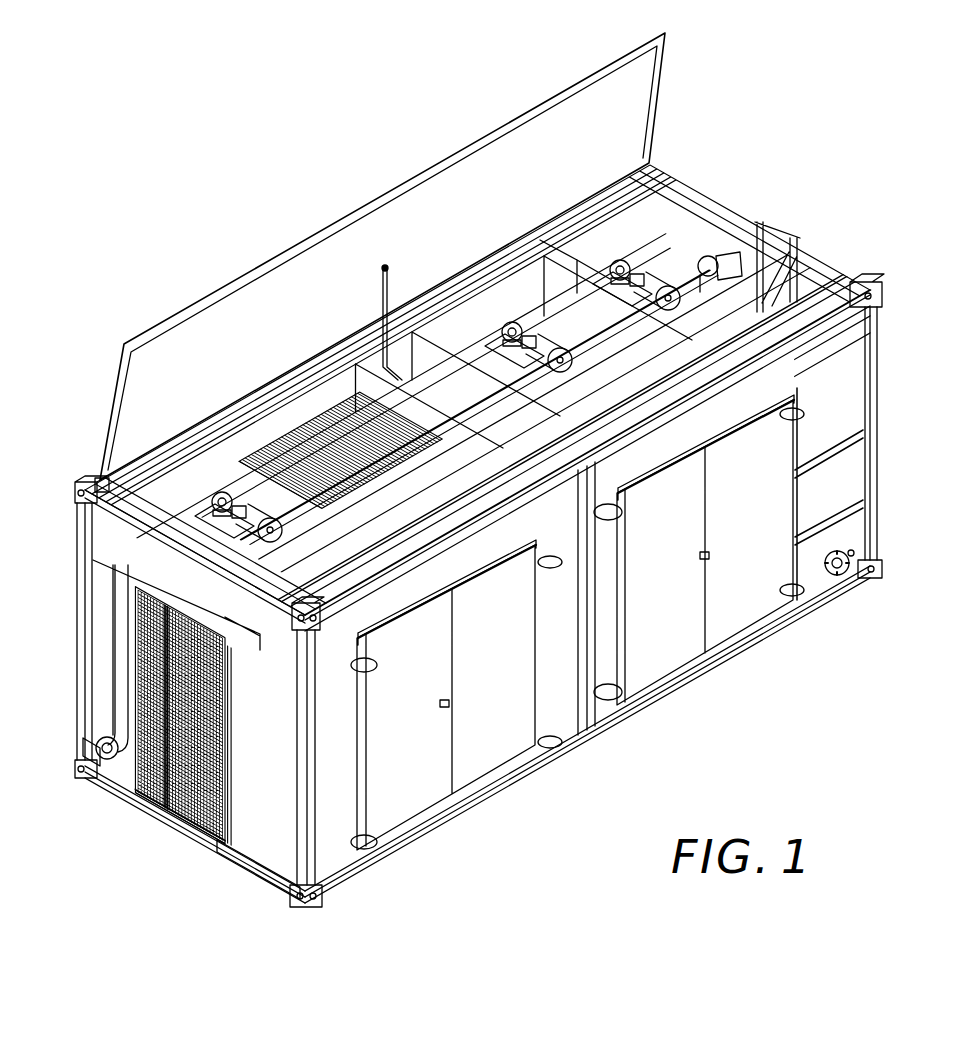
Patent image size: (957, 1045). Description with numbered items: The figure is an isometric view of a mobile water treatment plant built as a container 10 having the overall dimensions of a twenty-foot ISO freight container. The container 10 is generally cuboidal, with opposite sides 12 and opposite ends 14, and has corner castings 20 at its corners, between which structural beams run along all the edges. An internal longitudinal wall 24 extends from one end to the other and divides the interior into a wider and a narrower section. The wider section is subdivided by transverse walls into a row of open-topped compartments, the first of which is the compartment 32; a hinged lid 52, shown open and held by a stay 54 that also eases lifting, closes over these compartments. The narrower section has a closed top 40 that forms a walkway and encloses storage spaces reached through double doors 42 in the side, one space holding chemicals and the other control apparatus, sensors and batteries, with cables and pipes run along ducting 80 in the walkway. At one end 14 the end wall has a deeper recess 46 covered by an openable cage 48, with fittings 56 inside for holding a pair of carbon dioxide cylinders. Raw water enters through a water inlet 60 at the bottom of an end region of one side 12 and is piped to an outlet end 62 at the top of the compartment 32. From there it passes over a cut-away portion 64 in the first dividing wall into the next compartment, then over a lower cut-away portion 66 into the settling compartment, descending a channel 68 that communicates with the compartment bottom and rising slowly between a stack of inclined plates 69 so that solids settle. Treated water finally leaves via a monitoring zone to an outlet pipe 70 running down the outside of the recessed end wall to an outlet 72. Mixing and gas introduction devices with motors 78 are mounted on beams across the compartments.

The container 10 is at (430, 848).
The sides 12 is at (565, 723).
The ends 14 is at (258, 834).
The corner castings 20 is at (75, 493).
The internal longitudinal wall 24 is at (778, 290).
The compartment 32 is at (678, 225).
The closed top 40 is at (620, 410).
The double doors 42 is at (492, 764).
The recess 46 is at (128, 810).
The openable cage 48 is at (175, 790).
The lid 52 is at (289, 275).
The stay 54 is at (378, 280).
The fittings 56 is at (138, 686).
The water inlet 60 is at (847, 577).
The outlet end 62 is at (720, 262).
The cut-away portion 64 is at (523, 300).
The cut-away portion 66 is at (437, 380).
The channel 68 is at (420, 380).
The inclined plates 69 is at (290, 438).
The outlet pipe 70 is at (128, 598).
The outlet 72 is at (98, 742).
The motors 78 is at (240, 535).
The ducting 80 is at (368, 545).